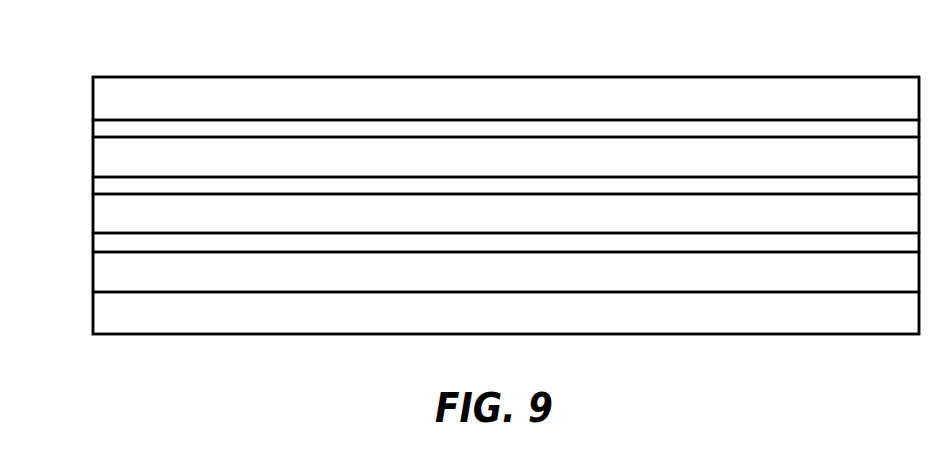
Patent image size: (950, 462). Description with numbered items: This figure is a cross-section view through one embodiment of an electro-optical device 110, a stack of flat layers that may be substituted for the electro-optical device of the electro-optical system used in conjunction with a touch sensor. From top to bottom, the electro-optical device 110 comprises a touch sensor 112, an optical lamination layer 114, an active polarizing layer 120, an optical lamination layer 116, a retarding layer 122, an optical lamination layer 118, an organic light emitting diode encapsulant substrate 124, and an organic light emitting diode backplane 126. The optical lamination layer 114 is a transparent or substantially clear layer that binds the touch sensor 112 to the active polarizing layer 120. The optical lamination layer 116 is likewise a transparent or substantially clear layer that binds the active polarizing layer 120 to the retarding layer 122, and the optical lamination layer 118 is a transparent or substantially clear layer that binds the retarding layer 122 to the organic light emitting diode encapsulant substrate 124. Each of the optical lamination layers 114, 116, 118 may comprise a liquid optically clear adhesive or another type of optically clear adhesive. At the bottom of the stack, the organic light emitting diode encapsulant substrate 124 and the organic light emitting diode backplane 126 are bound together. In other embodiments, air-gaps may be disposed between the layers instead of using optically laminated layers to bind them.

The electro-optical device 110 is at (652, 58).
The touch sensor 112 is at (107, 96).
The optical lamination layer 114 is at (107, 128).
The active polarizing layer 120 is at (107, 165).
The optical lamination layer 116 is at (107, 187).
The retarding layer 122 is at (107, 212).
The optical lamination layer 118 is at (107, 242).
The organic light emitting diode encapsulant substrate 124 is at (107, 274).
The organic light emitting diode backplane 126 is at (107, 310).